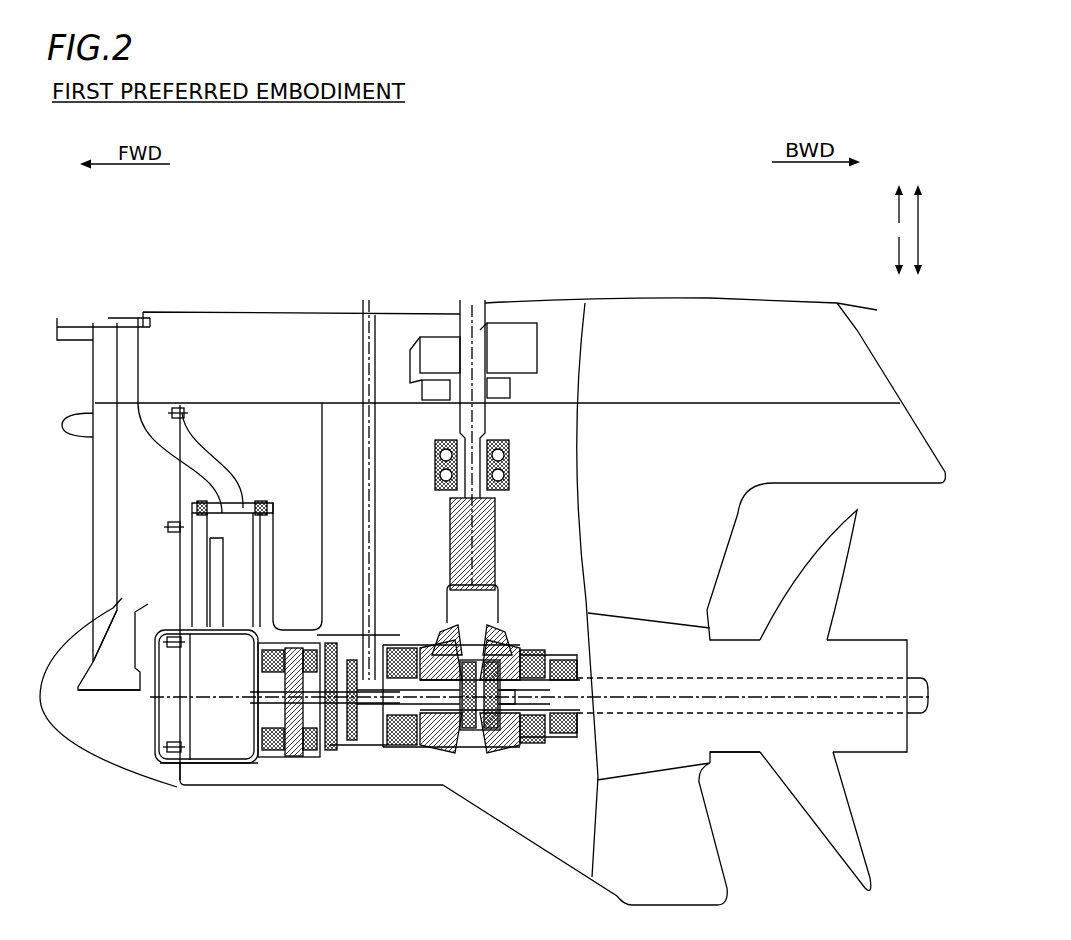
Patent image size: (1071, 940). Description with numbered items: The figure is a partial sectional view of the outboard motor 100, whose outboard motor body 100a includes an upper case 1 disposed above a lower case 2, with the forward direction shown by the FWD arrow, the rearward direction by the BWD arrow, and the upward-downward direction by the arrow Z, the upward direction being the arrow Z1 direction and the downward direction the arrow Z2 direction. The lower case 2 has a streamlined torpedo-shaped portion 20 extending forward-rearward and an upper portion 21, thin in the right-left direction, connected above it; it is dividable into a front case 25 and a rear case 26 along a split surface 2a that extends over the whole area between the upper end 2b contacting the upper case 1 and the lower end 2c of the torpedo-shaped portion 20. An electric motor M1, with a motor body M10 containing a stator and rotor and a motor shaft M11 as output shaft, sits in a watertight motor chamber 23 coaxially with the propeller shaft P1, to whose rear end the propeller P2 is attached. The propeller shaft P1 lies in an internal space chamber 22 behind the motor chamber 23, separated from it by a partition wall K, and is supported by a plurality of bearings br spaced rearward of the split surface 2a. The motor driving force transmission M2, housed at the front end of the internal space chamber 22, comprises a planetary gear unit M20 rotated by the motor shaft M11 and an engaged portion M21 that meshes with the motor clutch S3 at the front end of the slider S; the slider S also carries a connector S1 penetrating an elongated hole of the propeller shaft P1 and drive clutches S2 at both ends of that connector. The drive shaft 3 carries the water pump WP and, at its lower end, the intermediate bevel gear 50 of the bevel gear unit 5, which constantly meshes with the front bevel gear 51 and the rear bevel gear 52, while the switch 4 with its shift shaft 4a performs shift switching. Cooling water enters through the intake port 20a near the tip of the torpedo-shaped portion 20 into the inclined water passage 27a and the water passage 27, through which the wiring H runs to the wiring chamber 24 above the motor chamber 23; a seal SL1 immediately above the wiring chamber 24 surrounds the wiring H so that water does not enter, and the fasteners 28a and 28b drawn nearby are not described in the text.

The upper case 1 is at (882, 331).
The lower case 2 is at (752, 518).
The split surface 2a is at (200, 423).
The upper end of the lower case 2b is at (243, 403).
The lower end of the torpedo-shaped portion 2c is at (208, 787).
The drive shaft 3 is at (493, 523).
The switch 4 is at (387, 499).
The shift shaft 4a is at (377, 522).
The bevel gear unit 5 is at (500, 625).
The torpedo-shaped portion 20 is at (58, 670).
The intake port 20a is at (90, 670).
The upper portion 21 is at (102, 508).
The internal space chamber 22 is at (493, 737).
The motor chamber 23 is at (227, 765).
The wiring chamber 24 is at (258, 567).
The front case 25 is at (101, 390).
The rear case 26 is at (302, 388).
The water passage 27 is at (130, 546).
The inclined water passage 27a is at (110, 618).
The fastening bolt 28a is at (153, 627).
The fastening bolt 28b is at (175, 412).
The intermediate bevel gear 50 is at (503, 637).
The front bevel gear 51 is at (423, 740).
The rear bevel gear 52 is at (517, 747).
The outboard motor 100 is at (804, 238).
The outboard motor body 100a is at (753, 268).
The wiring H is at (217, 458).
The partition wall K is at (263, 745).
The electric motor M1 is at (72, 756).
The motor body M10 is at (260, 716).
The motor shaft M11 is at (265, 700).
The motor driving force transmission M2 is at (350, 828).
The planetary gear unit M20 is at (293, 760).
The engaged portion M21 is at (352, 747).
The propeller shaft P1 is at (688, 710).
The propeller P2 is at (872, 743).
The slider S is at (482, 737).
The connector S1 is at (473, 737).
The drive clutches S2 is at (450, 740).
The motor clutch S3 is at (368, 747).
The seal SL1 is at (267, 510).
The water pump WP is at (552, 342).
The vertical direction Z is at (929, 230).
The upward direction Z1 is at (885, 204).
The downward direction Z2 is at (885, 256).
The bearings br is at (398, 643).